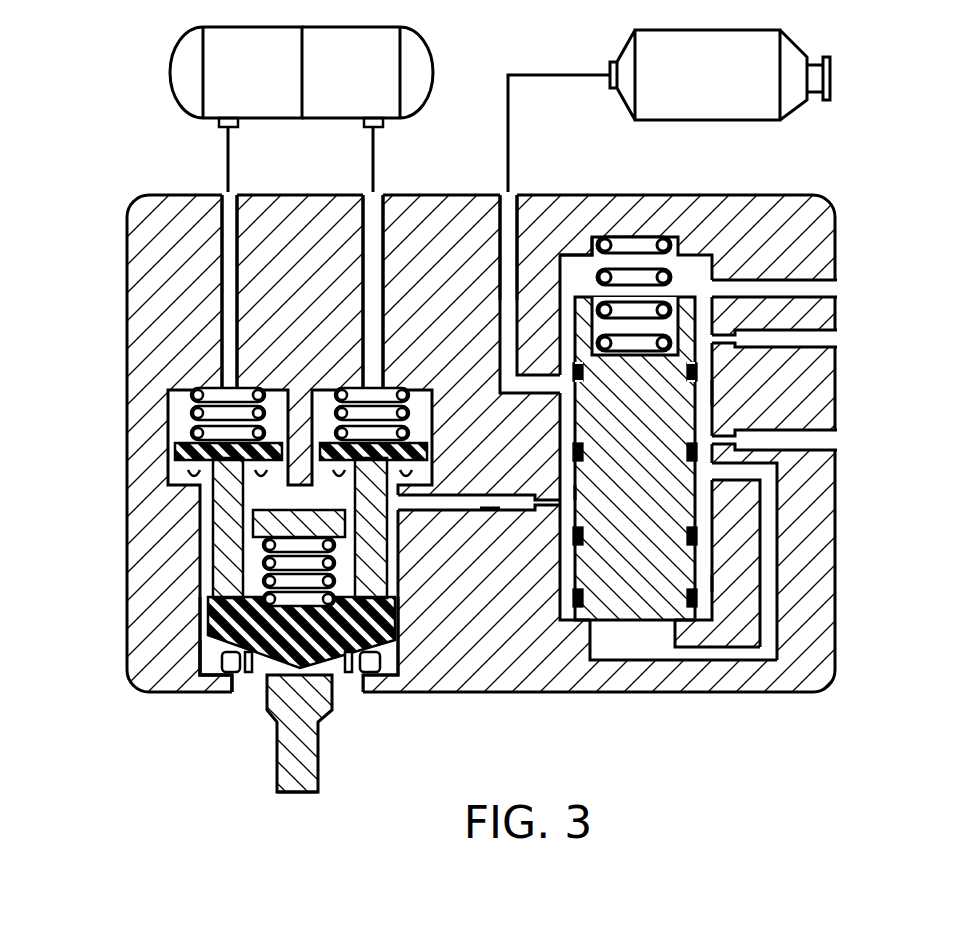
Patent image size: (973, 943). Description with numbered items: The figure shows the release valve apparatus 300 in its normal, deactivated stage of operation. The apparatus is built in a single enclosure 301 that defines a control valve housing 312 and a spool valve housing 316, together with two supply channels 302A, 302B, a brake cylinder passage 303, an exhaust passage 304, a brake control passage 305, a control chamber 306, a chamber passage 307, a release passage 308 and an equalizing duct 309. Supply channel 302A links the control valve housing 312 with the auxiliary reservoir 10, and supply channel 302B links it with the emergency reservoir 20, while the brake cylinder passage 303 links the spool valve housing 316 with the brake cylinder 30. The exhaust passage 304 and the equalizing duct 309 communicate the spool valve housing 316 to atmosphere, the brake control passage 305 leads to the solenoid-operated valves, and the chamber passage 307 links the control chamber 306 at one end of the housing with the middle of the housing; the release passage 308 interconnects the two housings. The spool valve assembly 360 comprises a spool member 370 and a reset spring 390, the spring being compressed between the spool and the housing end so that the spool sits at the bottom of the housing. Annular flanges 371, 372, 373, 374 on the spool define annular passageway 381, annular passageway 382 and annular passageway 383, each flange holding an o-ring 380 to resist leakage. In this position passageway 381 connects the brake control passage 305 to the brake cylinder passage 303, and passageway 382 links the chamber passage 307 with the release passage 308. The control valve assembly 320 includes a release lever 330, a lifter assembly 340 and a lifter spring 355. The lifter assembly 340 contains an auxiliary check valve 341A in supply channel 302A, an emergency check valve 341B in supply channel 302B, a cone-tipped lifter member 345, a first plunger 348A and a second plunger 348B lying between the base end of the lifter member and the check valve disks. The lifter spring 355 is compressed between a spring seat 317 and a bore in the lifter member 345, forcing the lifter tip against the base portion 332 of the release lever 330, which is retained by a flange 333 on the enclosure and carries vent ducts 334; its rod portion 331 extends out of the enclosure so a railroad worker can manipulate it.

The auxiliary reservoir 10 is at (367, 111).
The emergency reservoir 20 is at (236, 111).
The brake cylinder 30 is at (669, 112).
The release valve apparatus 300 is at (876, 182).
The enclosure 301 is at (828, 698).
The supply channel 302A is at (375, 220).
The supply channel 302B is at (232, 220).
The brake cylinder passage 303 is at (505, 200).
The exhaust passage 304 is at (828, 340).
The brake control passage 305 is at (828, 440).
The control chamber 306 is at (660, 640).
The chamber passage 307 is at (772, 556).
The release passage 308 is at (487, 512).
The equalizing duct 309 is at (826, 290).
The control valve housing 312 is at (205, 640).
The spool valve housing 316 is at (596, 258).
The spring seat 317 is at (405, 508).
The control valve assembly 320 is at (170, 386).
The release lever 330 is at (330, 712).
The rod portion 331 is at (283, 795).
The base portion 332 is at (263, 680).
The flange 333 is at (210, 688).
The vent duct 334 is at (348, 680).
The lifter assembly 340 is at (386, 642).
The auxiliary check valve 341A is at (420, 410).
The emergency check valve 341B is at (276, 410).
The lifter member 345 is at (258, 560).
The first plunger 348A is at (382, 562).
The second plunger 348B is at (215, 500).
The lifter spring 355 is at (268, 545).
The spool valve assembly 360 is at (690, 272).
The spool member 370 is at (610, 568).
The annular flange 371 is at (586, 373).
The annular flange 372 is at (690, 452).
The annular flange 373 is at (584, 534).
The annular flange 374 is at (690, 593).
The o-ring 380 is at (550, 360).
The annular passageway 381 is at (716, 398).
The annular passageway 382 is at (578, 494).
The annular passageway 383 is at (716, 583).
The reset spring 390 is at (640, 238).